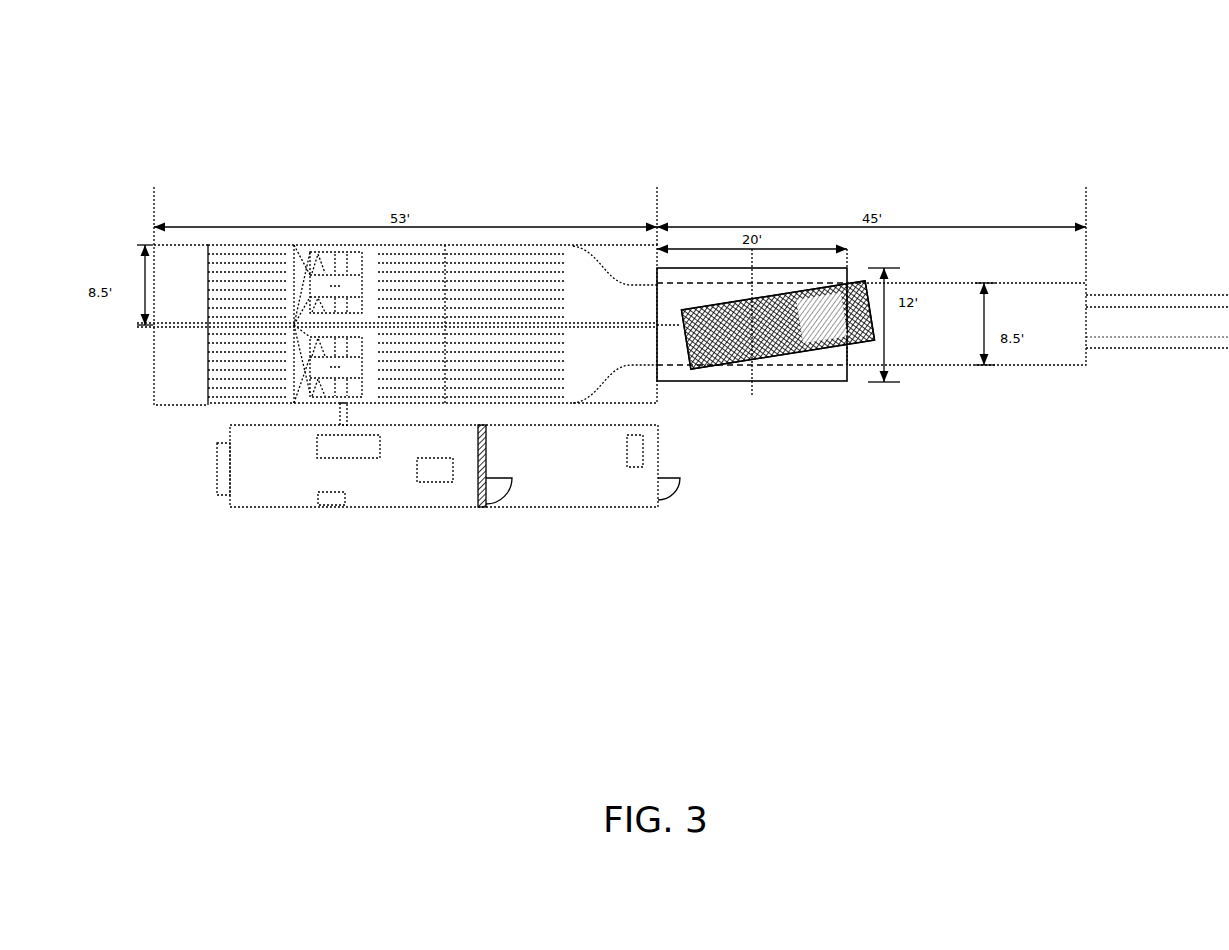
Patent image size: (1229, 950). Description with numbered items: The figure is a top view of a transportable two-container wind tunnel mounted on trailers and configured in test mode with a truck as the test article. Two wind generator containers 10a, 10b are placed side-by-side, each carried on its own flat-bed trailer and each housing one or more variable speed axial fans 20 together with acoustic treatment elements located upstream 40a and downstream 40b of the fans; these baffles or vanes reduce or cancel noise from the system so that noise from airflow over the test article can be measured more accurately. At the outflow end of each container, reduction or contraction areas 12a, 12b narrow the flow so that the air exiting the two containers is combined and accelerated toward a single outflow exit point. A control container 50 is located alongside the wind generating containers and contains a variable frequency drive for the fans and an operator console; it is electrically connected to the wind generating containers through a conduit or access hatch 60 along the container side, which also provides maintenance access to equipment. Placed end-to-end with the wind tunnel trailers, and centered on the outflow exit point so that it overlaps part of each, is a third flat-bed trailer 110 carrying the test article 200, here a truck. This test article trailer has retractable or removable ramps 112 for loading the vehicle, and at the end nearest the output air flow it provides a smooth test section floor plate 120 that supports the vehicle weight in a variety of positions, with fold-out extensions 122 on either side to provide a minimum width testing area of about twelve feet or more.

The wind generator container 10a is at (427, 242).
The wind generator container 10b is at (187, 406).
The reduction or contraction area 12a is at (612, 276).
The reduction or contraction area 12b is at (612, 380).
The variable speed axial fan 20 is at (312, 345).
The upstream acoustic treatment elements 40a is at (245, 355).
The downstream acoustic treatment elements 40b is at (513, 362).
The control container 50 is at (460, 508).
The conduit or access hatch 60 is at (343, 410).
The third flat-bed trailer 110 is at (950, 353).
The retractable or removable ramp 112 is at (1145, 293).
The test section floor plate 120 is at (828, 355).
The fold-out extension 122 is at (685, 378).
The test article 200 is at (787, 353).